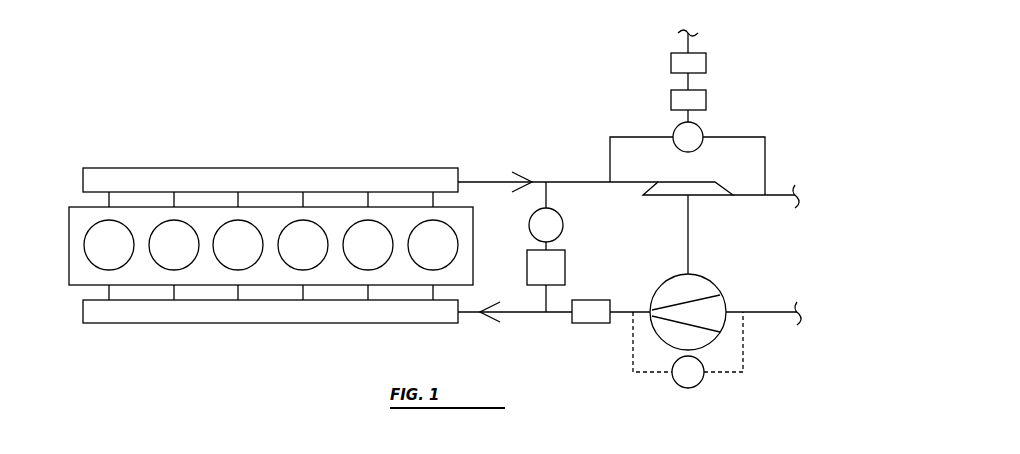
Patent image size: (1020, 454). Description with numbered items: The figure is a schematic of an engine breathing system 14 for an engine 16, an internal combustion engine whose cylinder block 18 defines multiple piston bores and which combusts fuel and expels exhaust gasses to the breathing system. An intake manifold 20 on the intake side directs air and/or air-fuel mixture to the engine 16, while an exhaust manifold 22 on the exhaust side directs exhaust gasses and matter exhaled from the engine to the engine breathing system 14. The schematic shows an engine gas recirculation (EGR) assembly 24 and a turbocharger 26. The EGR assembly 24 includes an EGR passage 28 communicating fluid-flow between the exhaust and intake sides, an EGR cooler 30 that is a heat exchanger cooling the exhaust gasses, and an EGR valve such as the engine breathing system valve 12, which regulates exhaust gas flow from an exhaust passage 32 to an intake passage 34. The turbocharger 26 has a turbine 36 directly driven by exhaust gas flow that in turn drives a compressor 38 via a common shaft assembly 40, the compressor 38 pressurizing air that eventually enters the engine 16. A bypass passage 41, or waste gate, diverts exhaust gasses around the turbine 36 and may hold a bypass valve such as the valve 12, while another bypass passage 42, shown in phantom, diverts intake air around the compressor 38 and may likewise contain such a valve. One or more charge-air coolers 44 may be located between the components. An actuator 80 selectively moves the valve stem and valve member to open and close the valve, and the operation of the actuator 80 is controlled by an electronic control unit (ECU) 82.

The engine breathing system valve 12 is at (564, 226).
The engine breathing system 14 is at (781, 122).
The engine 16 is at (224, 168).
The cylinder block 18 is at (81, 215).
The intake manifold 20 is at (190, 306).
The exhaust manifold 22 is at (322, 177).
The engine gas recirculation (EGR) assembly 24 is at (575, 265).
The turbocharger 26 is at (690, 250).
The EGR passage 28 is at (548, 190).
The EGR cooler 30 is at (527, 270).
The exhaust passage 32 is at (481, 178).
The intake passage 34 is at (518, 314).
The turbine 36 is at (686, 182).
The compressor 38 is at (664, 343).
The common shaft assembly 40 is at (688, 223).
The bypass passage 41 is at (619, 136).
The bypass passage 42 is at (743, 376).
The charge-air cooler 44 is at (600, 324).
The actuator 80 is at (706, 100).
The electronic control unit (ECU) 82 is at (706, 64).